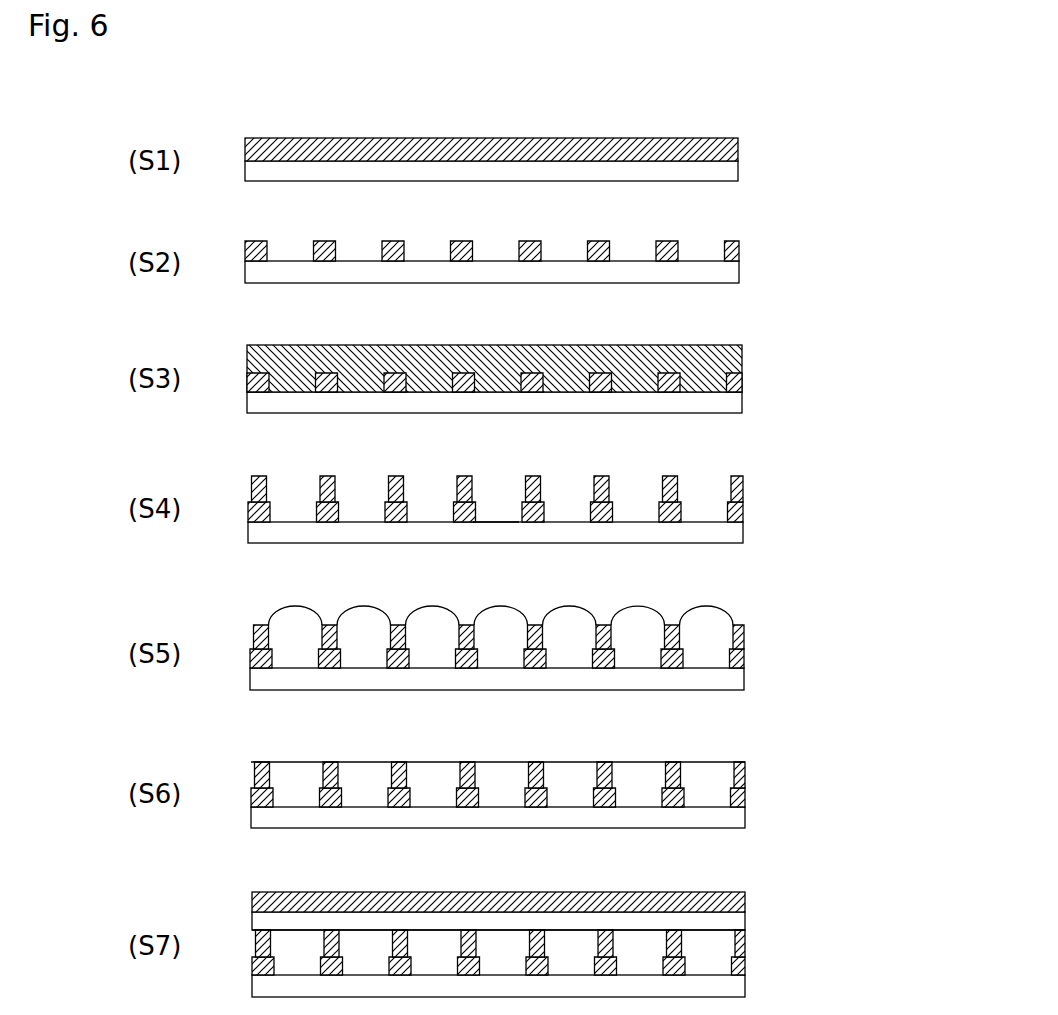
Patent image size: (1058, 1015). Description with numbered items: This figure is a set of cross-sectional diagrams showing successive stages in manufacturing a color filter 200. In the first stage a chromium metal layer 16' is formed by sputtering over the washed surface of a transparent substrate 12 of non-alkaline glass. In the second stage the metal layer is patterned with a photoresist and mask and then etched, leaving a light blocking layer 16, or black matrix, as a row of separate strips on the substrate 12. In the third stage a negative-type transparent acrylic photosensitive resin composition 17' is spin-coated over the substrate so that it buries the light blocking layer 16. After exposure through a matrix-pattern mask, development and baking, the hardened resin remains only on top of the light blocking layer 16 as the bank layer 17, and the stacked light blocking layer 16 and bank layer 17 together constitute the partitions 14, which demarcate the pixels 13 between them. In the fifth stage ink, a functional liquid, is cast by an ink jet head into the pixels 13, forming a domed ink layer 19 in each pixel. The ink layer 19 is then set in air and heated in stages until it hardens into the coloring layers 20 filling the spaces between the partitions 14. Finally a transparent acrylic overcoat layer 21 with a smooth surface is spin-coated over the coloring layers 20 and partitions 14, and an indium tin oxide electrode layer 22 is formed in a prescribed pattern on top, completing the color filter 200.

The transparent substrate 12 is at (738, 171).
The pixels 13 is at (483, 522).
The partitions 14 is at (832, 471).
The light blocking layer 16 is at (532, 604).
The metal layer 16' is at (536, 144).
The bank layer 17 is at (536, 712).
The transparent acrylic photosensitive resin composition 17' is at (537, 364).
The ink layer 19 is at (516, 608).
The coloring layers 20 is at (502, 762).
The overcoat layer 21 is at (745, 921).
The electrode layer 22 is at (745, 902).
The color filter 200 is at (833, 879).